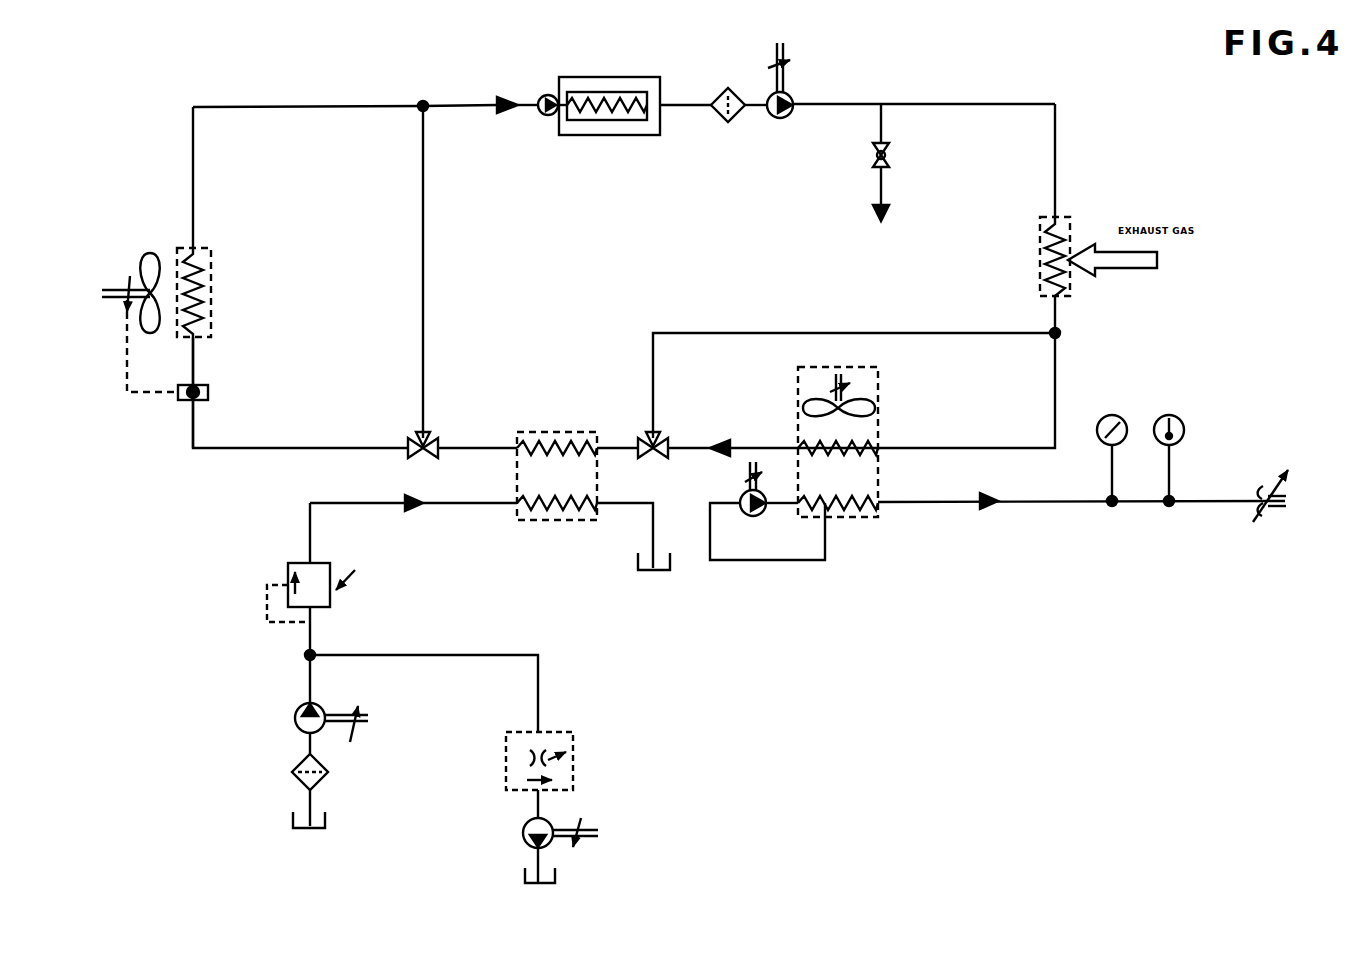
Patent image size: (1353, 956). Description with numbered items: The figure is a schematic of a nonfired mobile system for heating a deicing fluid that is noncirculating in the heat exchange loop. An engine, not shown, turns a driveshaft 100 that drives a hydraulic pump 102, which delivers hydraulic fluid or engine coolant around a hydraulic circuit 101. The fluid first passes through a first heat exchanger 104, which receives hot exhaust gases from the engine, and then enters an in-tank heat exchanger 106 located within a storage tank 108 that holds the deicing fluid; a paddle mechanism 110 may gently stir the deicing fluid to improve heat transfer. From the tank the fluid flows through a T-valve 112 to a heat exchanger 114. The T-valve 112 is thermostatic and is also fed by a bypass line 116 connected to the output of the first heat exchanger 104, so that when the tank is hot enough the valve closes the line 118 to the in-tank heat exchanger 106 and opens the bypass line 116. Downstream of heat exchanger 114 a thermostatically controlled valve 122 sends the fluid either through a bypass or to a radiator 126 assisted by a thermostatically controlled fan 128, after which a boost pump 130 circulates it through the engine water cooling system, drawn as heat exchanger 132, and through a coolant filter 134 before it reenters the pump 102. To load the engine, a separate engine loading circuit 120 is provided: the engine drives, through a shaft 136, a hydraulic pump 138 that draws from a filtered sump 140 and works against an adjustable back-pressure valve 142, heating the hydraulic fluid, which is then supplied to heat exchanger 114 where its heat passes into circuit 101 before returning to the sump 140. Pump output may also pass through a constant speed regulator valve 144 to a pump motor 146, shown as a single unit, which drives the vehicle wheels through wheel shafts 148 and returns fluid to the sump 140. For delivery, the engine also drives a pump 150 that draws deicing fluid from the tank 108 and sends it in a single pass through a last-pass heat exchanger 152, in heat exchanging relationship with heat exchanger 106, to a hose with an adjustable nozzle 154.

The driveshaft 100 is at (840, 51).
The hydraulic circuit 101 is at (345, 78).
The hydraulic pump 102 is at (885, 147).
The first heat exchanger 104 is at (1104, 217).
The in-tank heat exchanger 106 is at (889, 424).
The storage tank 108 is at (882, 550).
The paddle mechanism 110 is at (788, 395).
The T-valve 112 is at (608, 422).
The heat exchanger 114 is at (505, 513).
The bypass line 116 is at (854, 357).
The line 118 is at (733, 433).
The engine loading circuit 120 is at (328, 489).
The thermostatically controlled valve 122 is at (473, 410).
The radiator 126 is at (244, 267).
The thermostatically controlled fan 128 is at (129, 335).
The pump 130 is at (504, 76).
The heat exchanger 132 is at (605, 136).
The coolant filter 134 is at (693, 147).
The shaft 136 is at (360, 748).
The hydraulic pump 138 is at (251, 693).
The filtered sump 140 is at (438, 718).
The adjustable back-pressure valve 142 is at (256, 566).
The constant speed regulator valve 144 is at (507, 739).
The pump motor 146 is at (492, 826).
The wheel shafts 148 is at (622, 805).
The pump 150 is at (740, 511).
The heat exchanger 152 is at (877, 504).
The adjustable nozzle 154 is at (1228, 525).